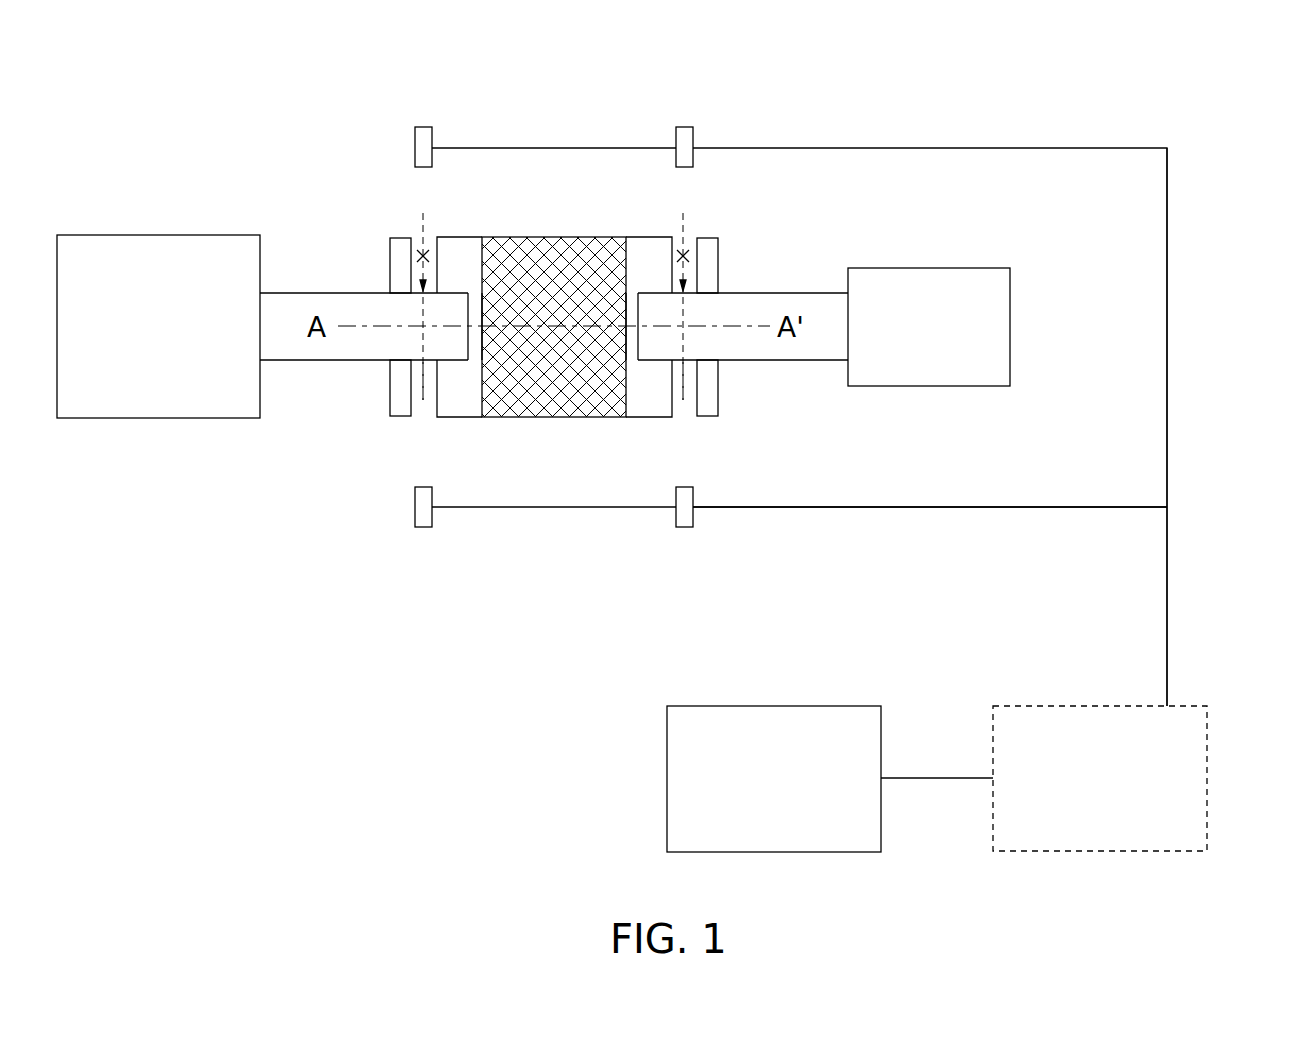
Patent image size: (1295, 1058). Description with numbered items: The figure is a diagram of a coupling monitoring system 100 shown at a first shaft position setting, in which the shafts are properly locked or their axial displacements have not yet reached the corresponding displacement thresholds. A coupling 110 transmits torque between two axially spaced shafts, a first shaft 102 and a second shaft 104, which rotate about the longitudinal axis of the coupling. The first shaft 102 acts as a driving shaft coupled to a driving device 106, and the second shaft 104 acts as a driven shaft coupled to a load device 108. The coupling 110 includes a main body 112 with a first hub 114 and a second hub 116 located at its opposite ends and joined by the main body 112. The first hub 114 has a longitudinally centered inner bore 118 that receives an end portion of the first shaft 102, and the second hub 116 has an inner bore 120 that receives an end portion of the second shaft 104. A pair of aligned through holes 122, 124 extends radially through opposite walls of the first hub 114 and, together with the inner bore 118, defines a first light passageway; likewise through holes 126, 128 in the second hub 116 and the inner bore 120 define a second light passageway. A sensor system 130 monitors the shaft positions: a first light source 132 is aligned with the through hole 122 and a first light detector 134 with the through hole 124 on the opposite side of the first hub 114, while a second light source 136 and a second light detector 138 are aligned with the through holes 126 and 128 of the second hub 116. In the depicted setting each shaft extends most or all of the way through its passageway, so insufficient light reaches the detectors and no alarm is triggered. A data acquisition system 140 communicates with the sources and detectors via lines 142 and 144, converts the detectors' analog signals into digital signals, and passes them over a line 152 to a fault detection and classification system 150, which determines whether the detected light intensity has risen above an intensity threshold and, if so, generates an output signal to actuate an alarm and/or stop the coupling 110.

The coupling monitoring system 100 is at (1058, 110).
The first shaft 102 is at (283, 298).
The second shaft 104 is at (822, 298).
The driving device 106 is at (182, 341).
The load device 108 is at (952, 341).
The coupling 110 is at (554, 316).
The main body 112 is at (577, 296).
The first hub 114 is at (397, 258).
The second hub 116 is at (712, 258).
The inner bore 118 is at (471, 374).
The inner bore 120 is at (636, 374).
The through hole 122 is at (408, 222).
The through hole 124 is at (419, 412).
The through hole 126 is at (698, 222).
The through hole 128 is at (687, 412).
The sensor system 130 is at (555, 328).
The first light source 132 is at (423, 142).
The first light detector 134 is at (420, 512).
The second light source 136 is at (686, 142).
The second light detector 138 is at (683, 512).
The data acquisition (DAQ) system 140 is at (1123, 792).
The line 142 is at (1170, 446).
The line 144 is at (1000, 505).
The fault detection and classification (FDC) system 150 is at (796, 792).
The line 152 is at (935, 775).